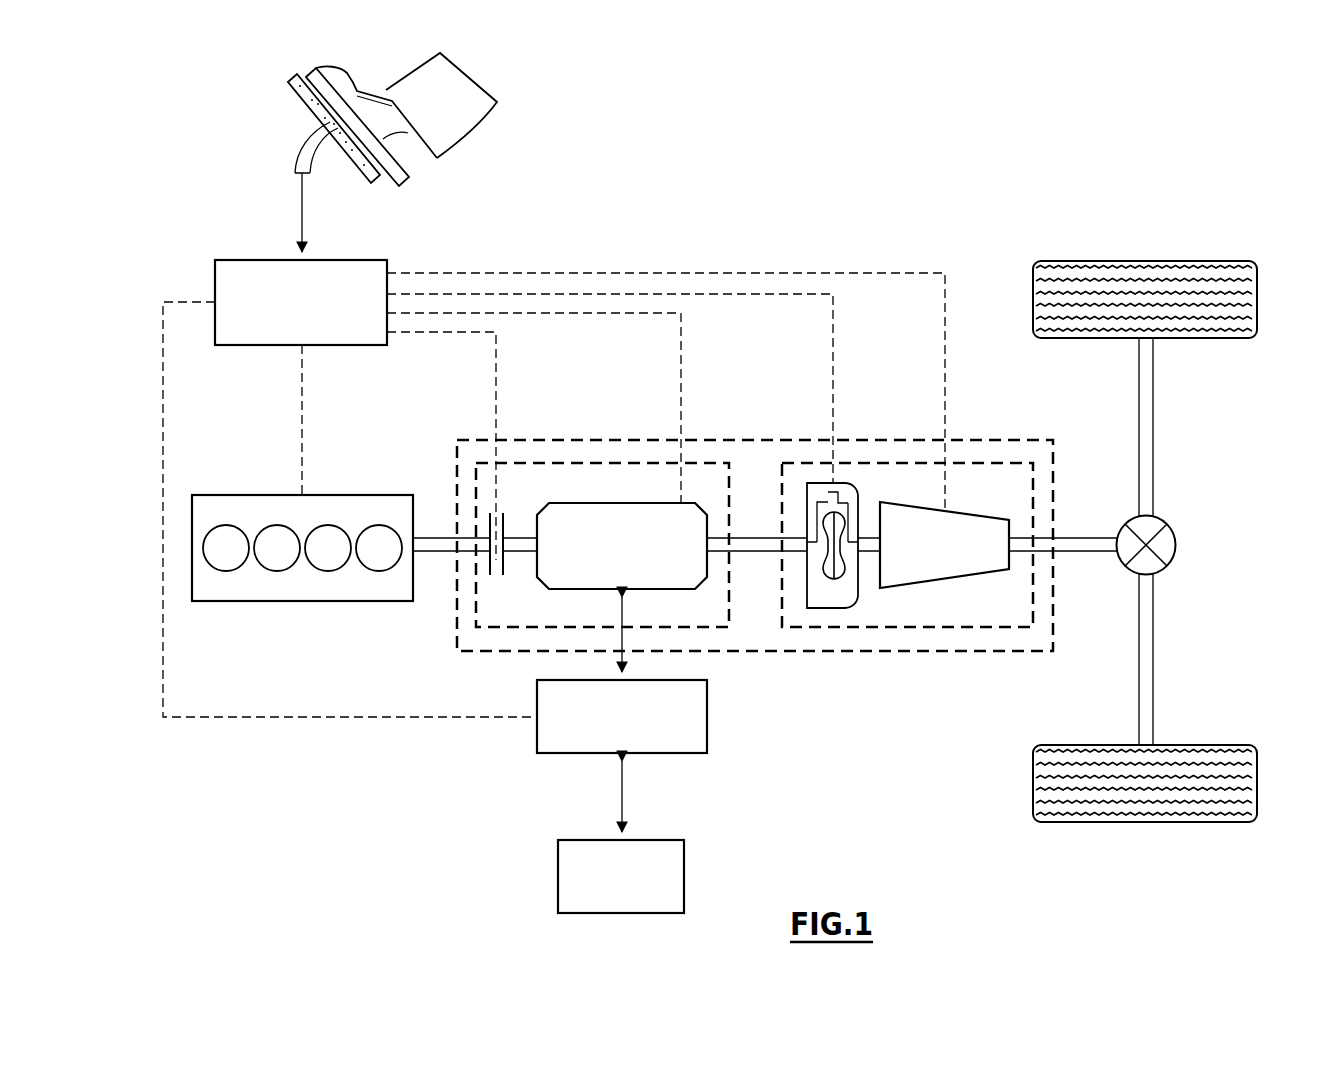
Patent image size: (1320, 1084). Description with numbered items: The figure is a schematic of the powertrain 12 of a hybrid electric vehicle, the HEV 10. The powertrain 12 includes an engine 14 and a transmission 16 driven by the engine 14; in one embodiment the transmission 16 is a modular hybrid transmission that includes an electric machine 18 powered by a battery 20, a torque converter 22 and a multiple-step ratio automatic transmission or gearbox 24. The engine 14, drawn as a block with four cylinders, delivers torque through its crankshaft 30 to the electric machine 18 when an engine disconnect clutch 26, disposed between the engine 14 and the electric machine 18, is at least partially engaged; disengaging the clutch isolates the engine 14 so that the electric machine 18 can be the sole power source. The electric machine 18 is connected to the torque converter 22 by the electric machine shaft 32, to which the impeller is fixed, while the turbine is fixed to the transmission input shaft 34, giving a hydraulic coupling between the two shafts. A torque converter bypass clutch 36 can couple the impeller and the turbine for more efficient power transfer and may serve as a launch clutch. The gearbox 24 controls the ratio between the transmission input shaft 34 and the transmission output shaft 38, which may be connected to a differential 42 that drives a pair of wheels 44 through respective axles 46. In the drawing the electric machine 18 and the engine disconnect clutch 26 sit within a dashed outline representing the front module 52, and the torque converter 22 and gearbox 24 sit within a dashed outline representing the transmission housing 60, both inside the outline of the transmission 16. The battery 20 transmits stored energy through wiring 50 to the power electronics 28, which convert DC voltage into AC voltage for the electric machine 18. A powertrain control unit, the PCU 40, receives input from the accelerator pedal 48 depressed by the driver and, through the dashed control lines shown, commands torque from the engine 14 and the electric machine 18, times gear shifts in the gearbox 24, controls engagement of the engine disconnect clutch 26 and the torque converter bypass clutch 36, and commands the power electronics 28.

The HEV 10 is at (906, 168).
The powertrain 12 is at (432, 769).
The engine 14 is at (247, 495).
The transmission 16 is at (768, 440).
The electric machine 18 is at (625, 503).
The battery 20 is at (558, 878).
The torque converter 22 is at (822, 609).
The transmission gearbox 24 is at (947, 590).
The engine disconnect clutch 26 is at (505, 566).
The power electronics 28 is at (708, 716).
The crankshaft 30 is at (441, 537).
The electric machine shaft 32 is at (518, 537).
The transmission input shaft 34 is at (867, 537).
The torque converter bypass clutch 36 is at (840, 490).
The transmission output shaft 38 is at (1080, 537).
The powertrain control unit 40 is at (258, 260).
The differential 42 is at (1176, 548).
The wheels 44 is at (1145, 261).
The axles 46 is at (1153, 431).
The accelerator pedal 48 is at (317, 113).
The wiring 50 is at (617, 805).
The front module 52 is at (530, 463).
The transmission housing 60 is at (972, 463).